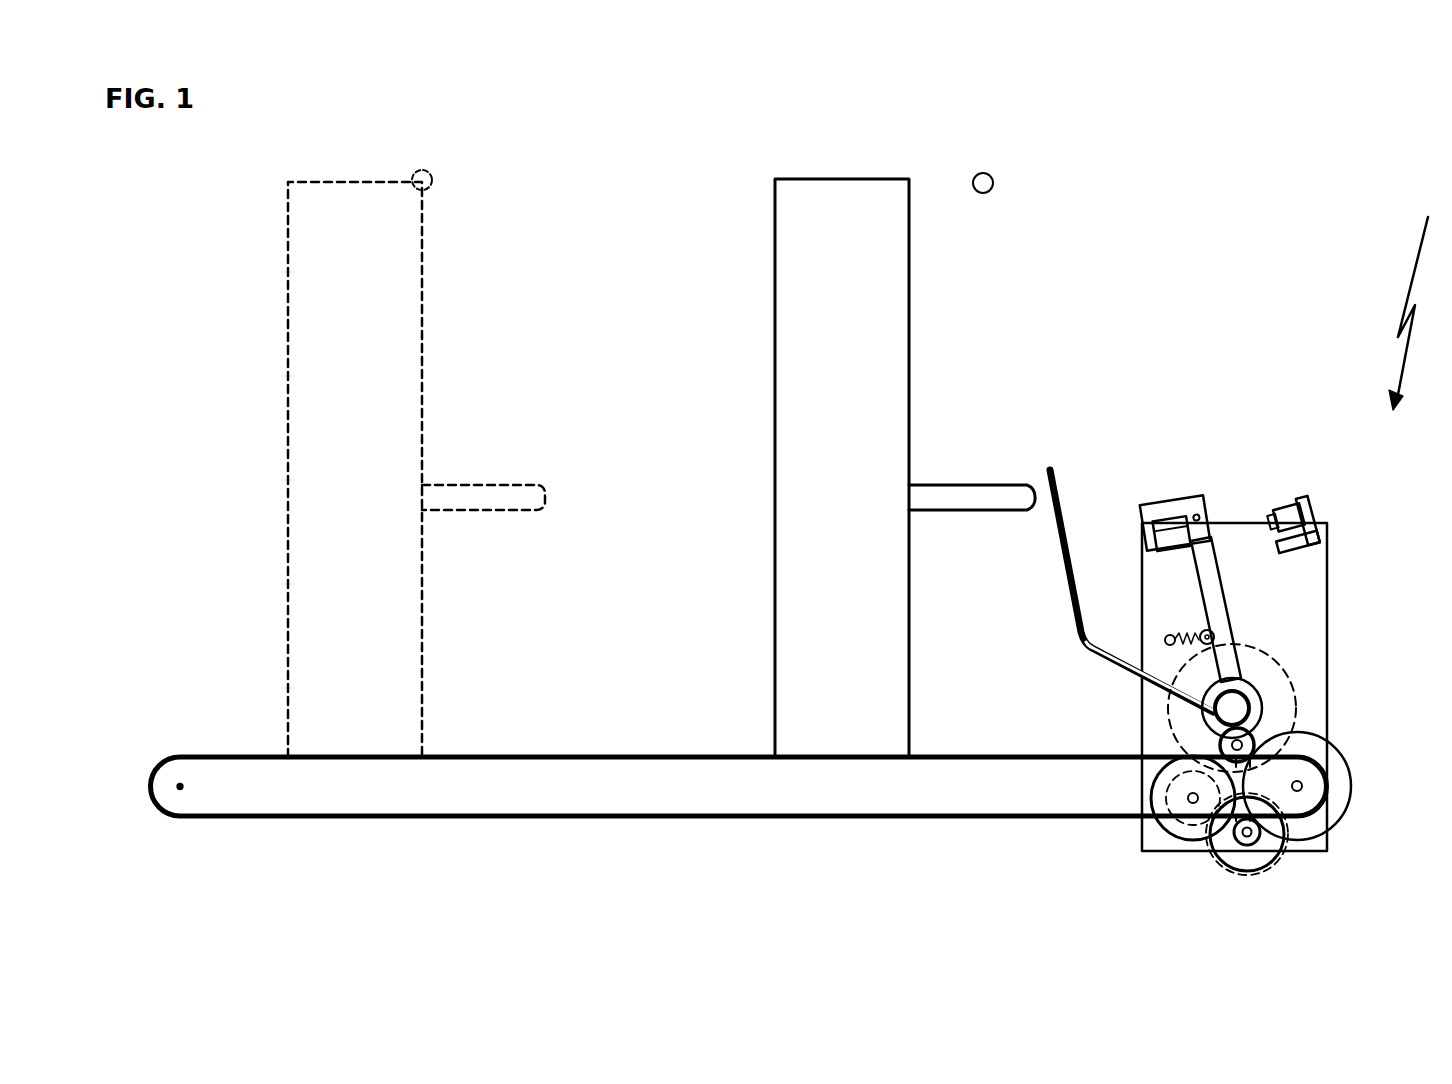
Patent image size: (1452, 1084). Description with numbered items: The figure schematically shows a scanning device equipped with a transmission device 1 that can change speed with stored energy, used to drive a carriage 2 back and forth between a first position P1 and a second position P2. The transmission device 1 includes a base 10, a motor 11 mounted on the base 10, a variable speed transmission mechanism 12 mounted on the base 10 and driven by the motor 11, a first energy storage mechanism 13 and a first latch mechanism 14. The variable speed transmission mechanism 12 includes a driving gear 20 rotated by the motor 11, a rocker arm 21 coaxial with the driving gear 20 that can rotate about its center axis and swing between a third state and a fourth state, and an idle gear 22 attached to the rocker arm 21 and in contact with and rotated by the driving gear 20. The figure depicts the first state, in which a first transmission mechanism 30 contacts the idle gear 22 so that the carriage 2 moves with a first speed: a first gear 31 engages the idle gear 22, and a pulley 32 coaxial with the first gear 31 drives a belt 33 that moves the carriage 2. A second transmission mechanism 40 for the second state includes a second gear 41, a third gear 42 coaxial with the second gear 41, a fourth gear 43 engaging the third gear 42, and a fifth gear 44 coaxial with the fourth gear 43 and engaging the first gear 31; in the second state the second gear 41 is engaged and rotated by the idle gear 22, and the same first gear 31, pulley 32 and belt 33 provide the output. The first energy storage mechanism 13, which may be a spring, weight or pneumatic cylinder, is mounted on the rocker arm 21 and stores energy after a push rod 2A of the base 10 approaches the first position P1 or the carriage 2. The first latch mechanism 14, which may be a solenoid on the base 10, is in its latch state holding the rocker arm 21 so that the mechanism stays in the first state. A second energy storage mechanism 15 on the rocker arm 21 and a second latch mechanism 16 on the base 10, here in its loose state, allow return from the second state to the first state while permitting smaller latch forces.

The transmission device 1 is at (1414, 295).
The carriage 2 is at (288, 367).
The push rod 2A is at (977, 492).
The base 10 is at (1328, 590).
The motor 11 is at (1168, 716).
The variable speed transmission mechanism 12 is at (188, 143).
The first energy storage mechanism 13 is at (1078, 632).
The first latch mechanism 14 is at (1160, 505).
The second energy storage mechanism 15 is at (1172, 630).
The second latch mechanism 16 is at (1312, 512).
The driving gear 20 is at (1350, 679).
The rocker arm 21 is at (1352, 632).
The idle gear 22 is at (1350, 711).
The first transmission mechanism 30 is at (655, 123).
The first gear 31 is at (1368, 800).
The pulley 32 is at (1357, 755).
The belt 33 is at (963, 852).
The second transmission mechanism 40 is at (1242, 92).
The second gear 41 is at (1147, 870).
The third gear 42 is at (1191, 866).
The fourth gear 43 is at (1220, 893).
The fifth gear 44 is at (1267, 887).
The first position P1 is at (993, 185).
The second position P2 is at (435, 185).